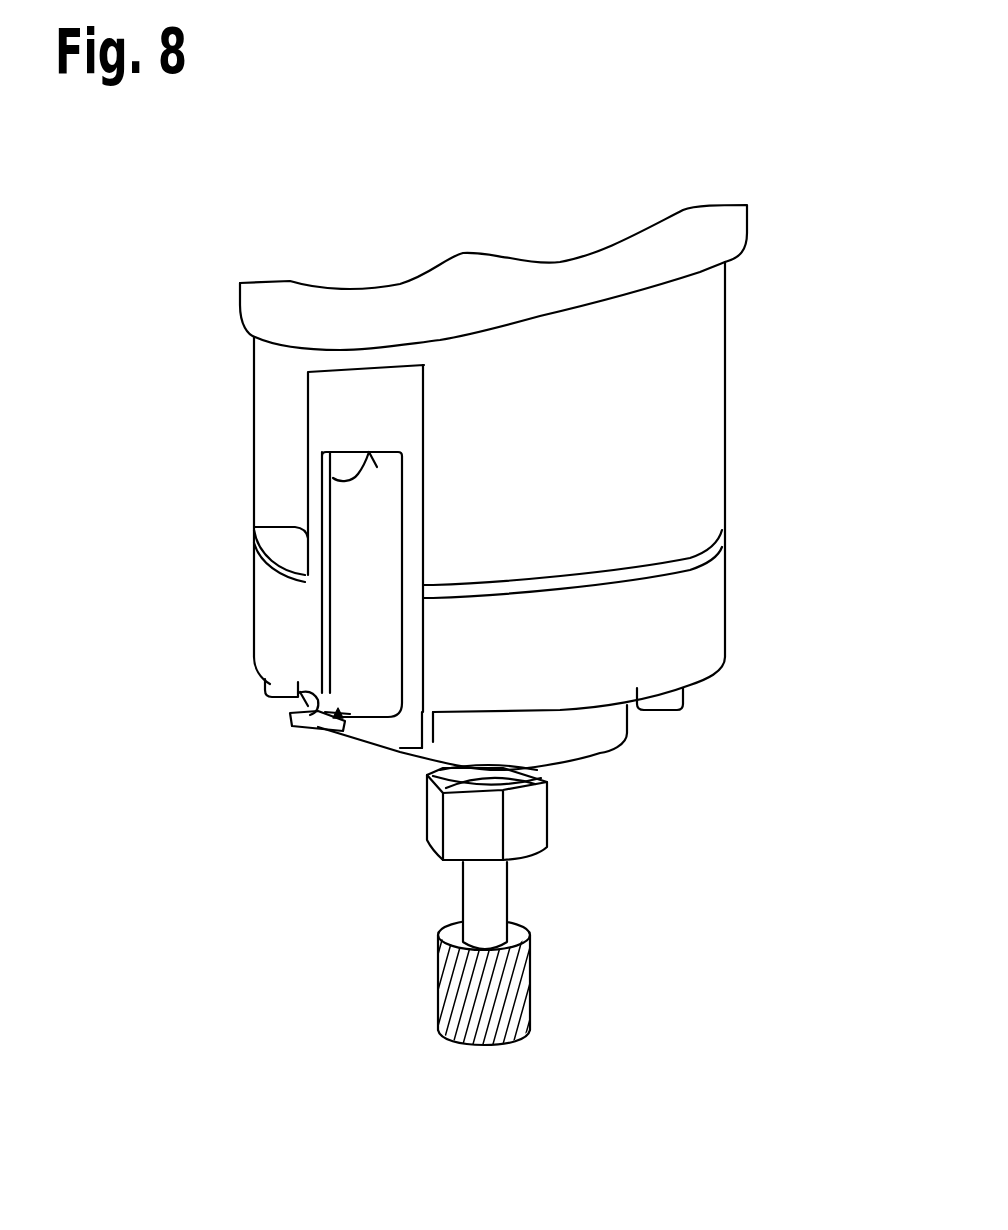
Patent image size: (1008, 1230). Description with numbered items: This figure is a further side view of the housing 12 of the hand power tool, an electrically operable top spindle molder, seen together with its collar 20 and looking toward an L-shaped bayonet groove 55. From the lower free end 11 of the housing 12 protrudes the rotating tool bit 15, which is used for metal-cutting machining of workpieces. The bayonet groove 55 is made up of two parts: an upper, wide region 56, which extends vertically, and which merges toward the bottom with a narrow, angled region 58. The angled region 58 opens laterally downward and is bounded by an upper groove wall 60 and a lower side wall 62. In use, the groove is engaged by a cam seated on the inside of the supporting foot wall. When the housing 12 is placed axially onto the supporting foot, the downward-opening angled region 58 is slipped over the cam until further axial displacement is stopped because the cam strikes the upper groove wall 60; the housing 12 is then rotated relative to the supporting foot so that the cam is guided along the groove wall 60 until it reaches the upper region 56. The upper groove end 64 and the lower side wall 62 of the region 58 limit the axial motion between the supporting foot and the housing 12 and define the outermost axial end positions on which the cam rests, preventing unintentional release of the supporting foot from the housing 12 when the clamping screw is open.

The collar 20 is at (700, 405).
The housing 12 is at (762, 592).
The upper, wide region 56 is at (372, 617).
The upper groove end 64 is at (333, 478).
The bayonet groove 55 is at (324, 544).
The narrow, angled region 58 is at (292, 711).
The upper groove wall 60 is at (318, 723).
The lower side wall 62 is at (340, 722).
The lower free end 11 is at (585, 733).
The tool bit 15 is at (483, 897).